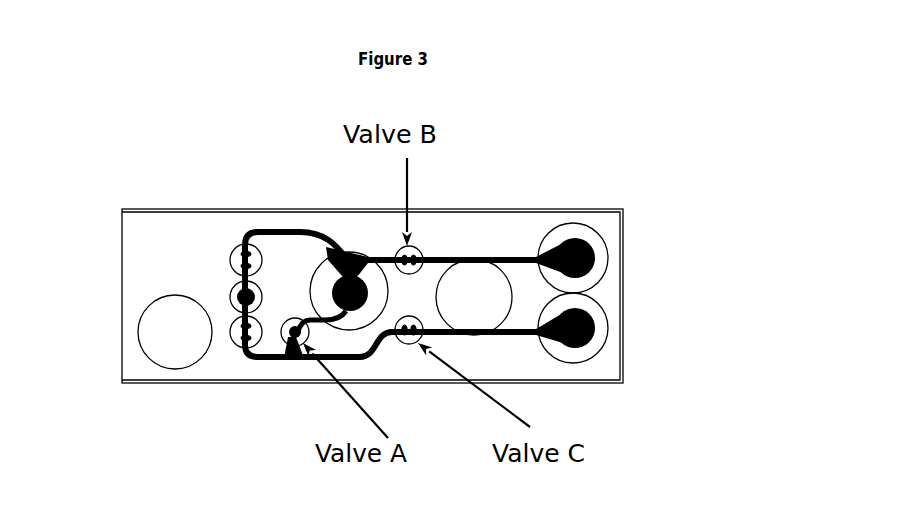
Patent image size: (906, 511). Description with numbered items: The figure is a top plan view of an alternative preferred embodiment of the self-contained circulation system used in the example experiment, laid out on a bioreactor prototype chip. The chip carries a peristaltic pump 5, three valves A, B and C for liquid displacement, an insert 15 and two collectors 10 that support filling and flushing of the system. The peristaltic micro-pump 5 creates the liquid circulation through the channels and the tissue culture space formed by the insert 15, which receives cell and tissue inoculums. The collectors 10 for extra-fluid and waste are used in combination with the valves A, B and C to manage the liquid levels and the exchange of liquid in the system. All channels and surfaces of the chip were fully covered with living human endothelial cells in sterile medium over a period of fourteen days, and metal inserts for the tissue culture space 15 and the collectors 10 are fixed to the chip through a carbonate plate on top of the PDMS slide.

The peristaltic pump 5 is at (214, 269).
The collectors 10 is at (611, 268).
The insert 15 is at (312, 269).